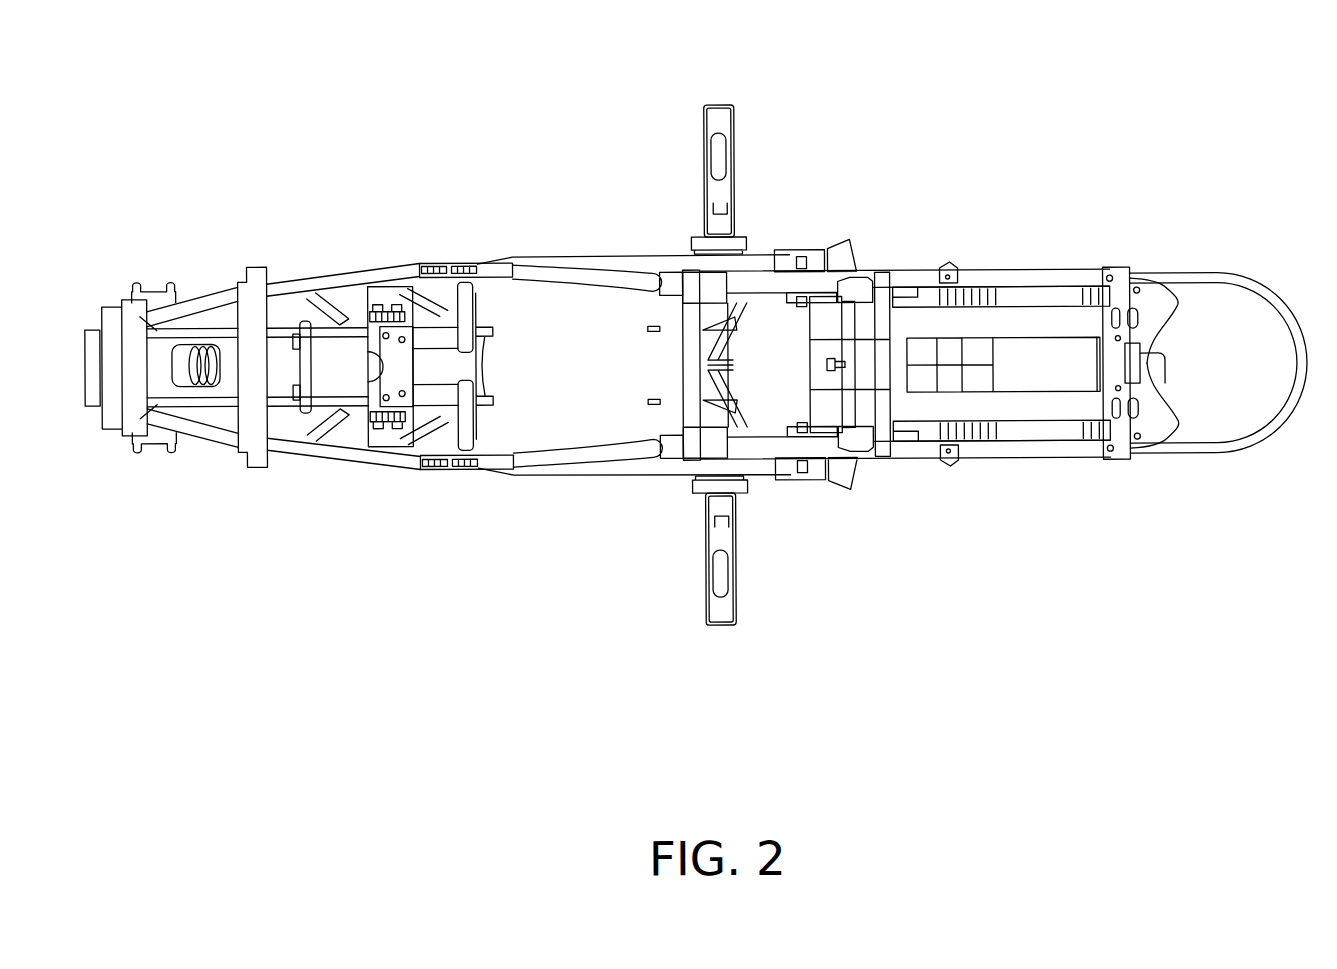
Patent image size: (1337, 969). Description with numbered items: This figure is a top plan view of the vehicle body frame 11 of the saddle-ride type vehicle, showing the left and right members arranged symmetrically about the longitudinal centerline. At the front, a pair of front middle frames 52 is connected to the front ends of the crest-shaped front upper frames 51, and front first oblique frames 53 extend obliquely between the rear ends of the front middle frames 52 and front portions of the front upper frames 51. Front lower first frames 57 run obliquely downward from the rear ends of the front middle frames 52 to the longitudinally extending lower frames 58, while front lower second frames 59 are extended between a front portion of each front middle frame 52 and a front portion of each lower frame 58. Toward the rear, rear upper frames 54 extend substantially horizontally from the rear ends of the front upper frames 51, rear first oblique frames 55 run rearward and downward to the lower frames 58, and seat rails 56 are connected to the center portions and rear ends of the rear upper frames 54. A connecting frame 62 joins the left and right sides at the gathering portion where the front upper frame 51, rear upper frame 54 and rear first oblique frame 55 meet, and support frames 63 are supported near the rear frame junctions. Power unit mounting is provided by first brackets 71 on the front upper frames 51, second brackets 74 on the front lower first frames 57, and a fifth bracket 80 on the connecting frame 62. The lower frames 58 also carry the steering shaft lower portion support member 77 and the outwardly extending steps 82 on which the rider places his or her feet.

The vehicle body frame 11 is at (549, 250).
The front upper frame 51 is at (347, 282).
The front middle frame 52 is at (296, 316).
The front first oblique frame 53 is at (340, 316).
The rear upper frame 54 is at (783, 279).
The rear first oblique frame 55 is at (734, 264).
The seat rail 56 is at (1007, 283).
The front lower first frame 57 is at (417, 307).
The lower frame 58 is at (610, 266).
The front lower second frame 59 is at (143, 340).
The connecting frame 62 is at (692, 401).
The support frame 63 is at (1064, 323).
The first bracket 71 is at (437, 273).
The second bracket 74 is at (405, 307).
The steering shaft lower portion support member 77 is at (185, 350).
The fifth bracket 80 is at (660, 320).
The step 82 is at (722, 106).